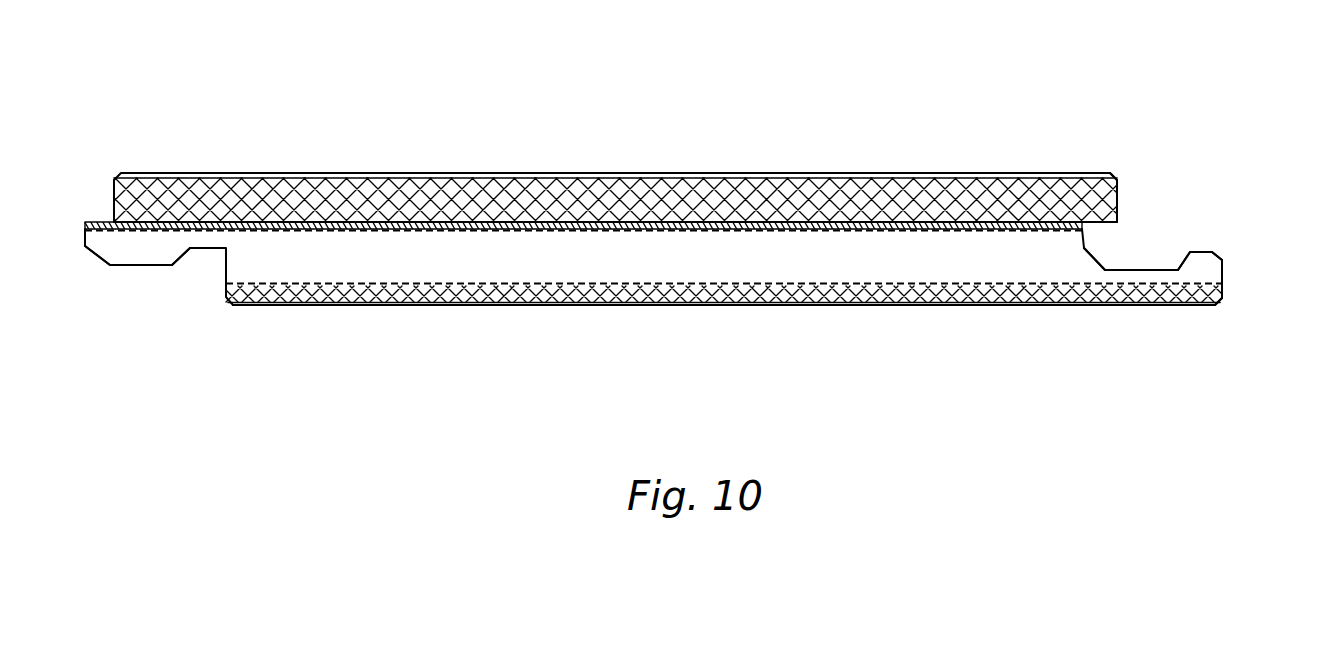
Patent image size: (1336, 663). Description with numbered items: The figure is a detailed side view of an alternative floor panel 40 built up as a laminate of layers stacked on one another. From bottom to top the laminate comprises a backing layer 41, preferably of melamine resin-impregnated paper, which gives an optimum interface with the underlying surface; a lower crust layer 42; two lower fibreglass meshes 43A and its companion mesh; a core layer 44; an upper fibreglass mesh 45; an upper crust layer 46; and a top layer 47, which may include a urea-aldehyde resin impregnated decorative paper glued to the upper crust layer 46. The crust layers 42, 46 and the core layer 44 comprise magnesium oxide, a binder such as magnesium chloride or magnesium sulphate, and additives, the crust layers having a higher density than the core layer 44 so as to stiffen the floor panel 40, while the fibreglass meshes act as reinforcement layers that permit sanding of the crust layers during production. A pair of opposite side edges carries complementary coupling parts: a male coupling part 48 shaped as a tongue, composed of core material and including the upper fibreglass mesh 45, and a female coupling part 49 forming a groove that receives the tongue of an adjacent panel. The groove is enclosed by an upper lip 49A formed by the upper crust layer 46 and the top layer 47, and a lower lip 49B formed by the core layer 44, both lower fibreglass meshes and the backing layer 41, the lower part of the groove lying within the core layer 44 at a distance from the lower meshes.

The floor panel 40 is at (79, 153).
The backing layer 41 is at (498, 305).
The lower crust layer 42 is at (623, 303).
The lower fibreglass mesh 43A is at (780, 283).
The core layer 44 is at (433, 260).
The upper fibreglass mesh 45 is at (568, 226).
The upper crust layer 46 is at (693, 207).
The top layer 47 is at (815, 173).
The male coupling part 48 is at (105, 282).
The female coupling part 49 is at (1179, 218).
The upper lip 49A is at (1136, 180).
The lower lip 49B is at (1239, 263).